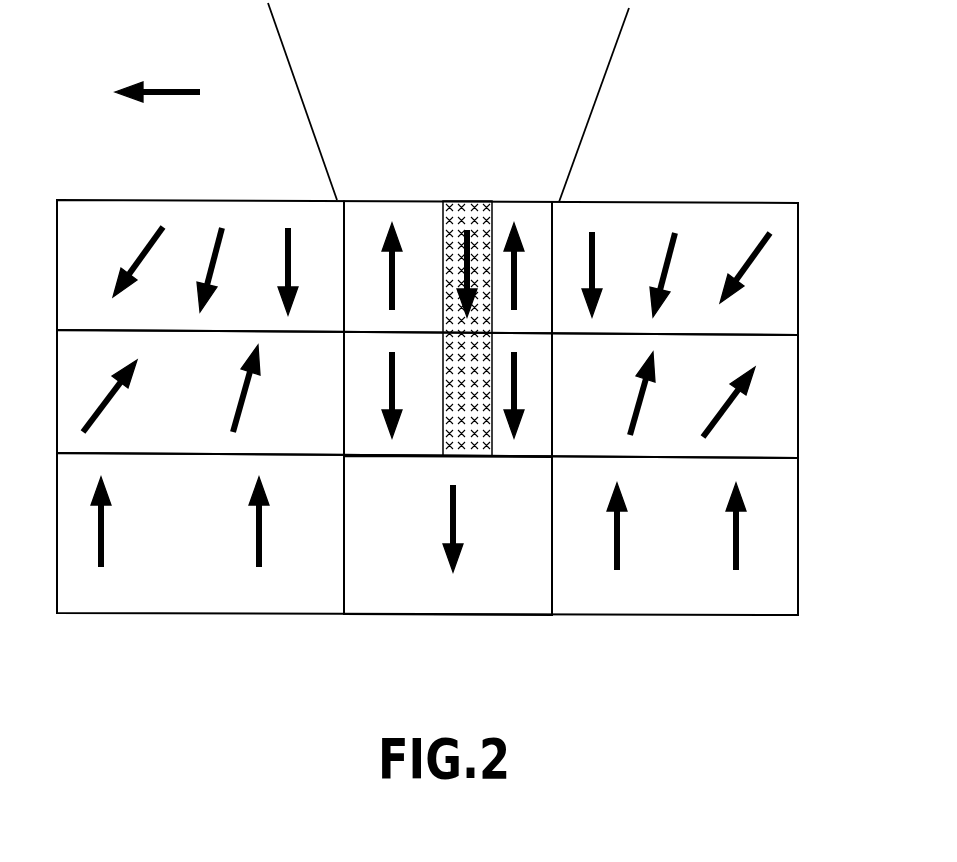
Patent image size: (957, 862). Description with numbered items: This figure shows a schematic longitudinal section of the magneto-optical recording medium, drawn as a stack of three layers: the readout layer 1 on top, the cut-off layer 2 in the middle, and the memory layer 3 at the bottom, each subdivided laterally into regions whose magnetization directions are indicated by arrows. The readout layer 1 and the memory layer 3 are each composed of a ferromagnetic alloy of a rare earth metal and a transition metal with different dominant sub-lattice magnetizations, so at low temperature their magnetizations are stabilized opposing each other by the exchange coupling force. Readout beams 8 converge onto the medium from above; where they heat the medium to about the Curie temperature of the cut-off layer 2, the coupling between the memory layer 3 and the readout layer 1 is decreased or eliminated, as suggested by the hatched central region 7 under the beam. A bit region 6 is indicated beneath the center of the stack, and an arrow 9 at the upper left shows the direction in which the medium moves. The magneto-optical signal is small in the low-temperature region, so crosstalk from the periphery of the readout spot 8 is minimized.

The readout layer 1 is at (798, 278).
The cut-off layer 2 is at (798, 402).
The memory layer 3 is at (798, 540).
The recording bit region 6 is at (450, 615).
The reproduction aperture region 7 is at (467, 200).
The readout beams 8 is at (592, 115).
The medium moving direction 9 is at (172, 95).